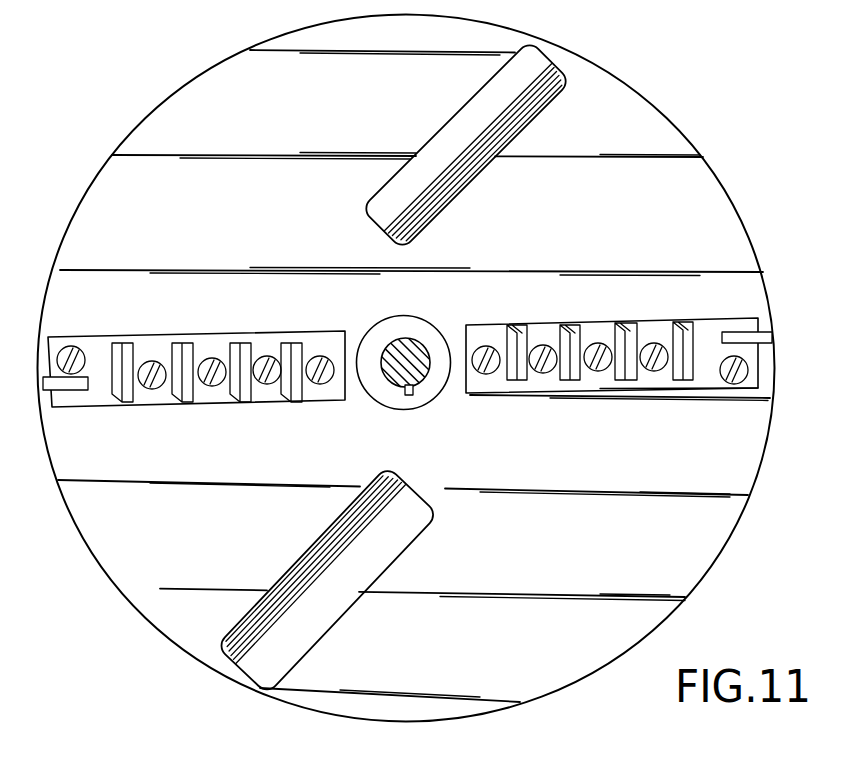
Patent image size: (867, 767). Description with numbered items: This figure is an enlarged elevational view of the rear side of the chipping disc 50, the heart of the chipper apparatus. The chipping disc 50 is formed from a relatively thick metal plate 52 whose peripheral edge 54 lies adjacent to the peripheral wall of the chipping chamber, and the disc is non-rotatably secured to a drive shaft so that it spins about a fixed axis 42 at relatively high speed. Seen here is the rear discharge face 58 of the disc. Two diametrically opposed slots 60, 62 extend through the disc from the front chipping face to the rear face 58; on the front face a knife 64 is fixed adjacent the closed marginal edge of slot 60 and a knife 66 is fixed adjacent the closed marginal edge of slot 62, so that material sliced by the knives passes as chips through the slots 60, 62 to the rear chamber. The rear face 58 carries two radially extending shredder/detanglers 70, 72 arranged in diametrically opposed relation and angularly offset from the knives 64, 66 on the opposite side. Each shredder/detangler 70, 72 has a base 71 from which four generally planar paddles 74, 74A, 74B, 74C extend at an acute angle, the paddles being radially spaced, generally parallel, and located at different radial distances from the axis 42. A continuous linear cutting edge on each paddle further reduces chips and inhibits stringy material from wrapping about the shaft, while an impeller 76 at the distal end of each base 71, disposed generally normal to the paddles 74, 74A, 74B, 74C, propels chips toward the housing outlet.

The fixed axis 42 is at (400, 368).
The chipping disc 50 is at (727, 141).
The metal plate 52 is at (103, 183).
The peripheral edge 54 is at (157, 633).
The rear face 58 is at (600, 615).
The slot 60 is at (311, 565).
The slot 62 is at (481, 160).
The knife 64 is at (510, 128).
The knife 66 is at (283, 597).
The shredder/detangler 70 is at (646, 383).
The base 71 is at (757, 392).
The shredder/detangler 72 is at (256, 309).
The paddle 74 is at (690, 323).
The paddle 74A is at (628, 324).
The paddle 74B is at (570, 381).
The paddle 74C is at (517, 382).
The impeller 76 is at (767, 336).